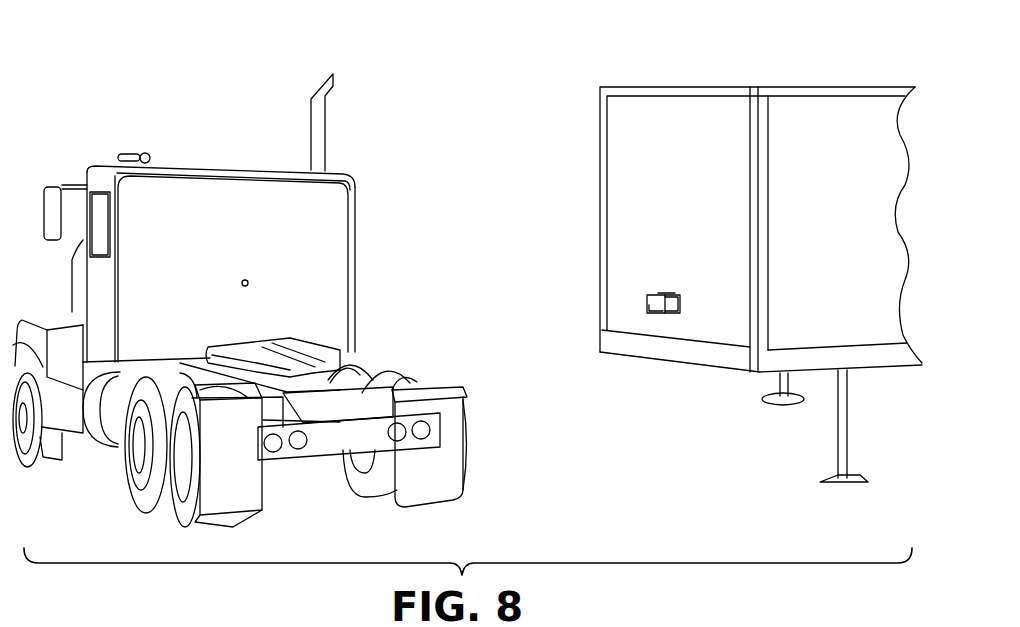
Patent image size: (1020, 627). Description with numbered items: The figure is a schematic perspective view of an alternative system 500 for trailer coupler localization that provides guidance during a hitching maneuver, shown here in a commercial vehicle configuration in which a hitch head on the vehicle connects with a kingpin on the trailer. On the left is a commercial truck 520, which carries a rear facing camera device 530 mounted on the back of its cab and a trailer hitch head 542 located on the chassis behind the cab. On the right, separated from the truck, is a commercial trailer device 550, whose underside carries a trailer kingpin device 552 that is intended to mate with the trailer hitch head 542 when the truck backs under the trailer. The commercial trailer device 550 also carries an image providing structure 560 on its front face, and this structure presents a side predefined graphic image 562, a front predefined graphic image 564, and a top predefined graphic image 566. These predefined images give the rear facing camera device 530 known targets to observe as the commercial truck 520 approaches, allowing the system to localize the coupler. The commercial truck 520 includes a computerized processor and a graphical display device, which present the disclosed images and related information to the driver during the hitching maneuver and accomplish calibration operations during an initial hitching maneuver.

The alternative system for trailer coupler localization 500 is at (144, 62).
The commercial truck 520 is at (198, 164).
The rear facing camera device 530 is at (243, 280).
The trailer hitch head 542 is at (255, 345).
The commercial trailer device 550 is at (598, 160).
The trailer kingpin device 552 is at (776, 378).
The image providing structure 560 is at (647, 305).
The side predefined graphic image 562 is at (680, 307).
The front predefined graphic image 564 is at (648, 308).
The top predefined graphic image 566 is at (662, 296).